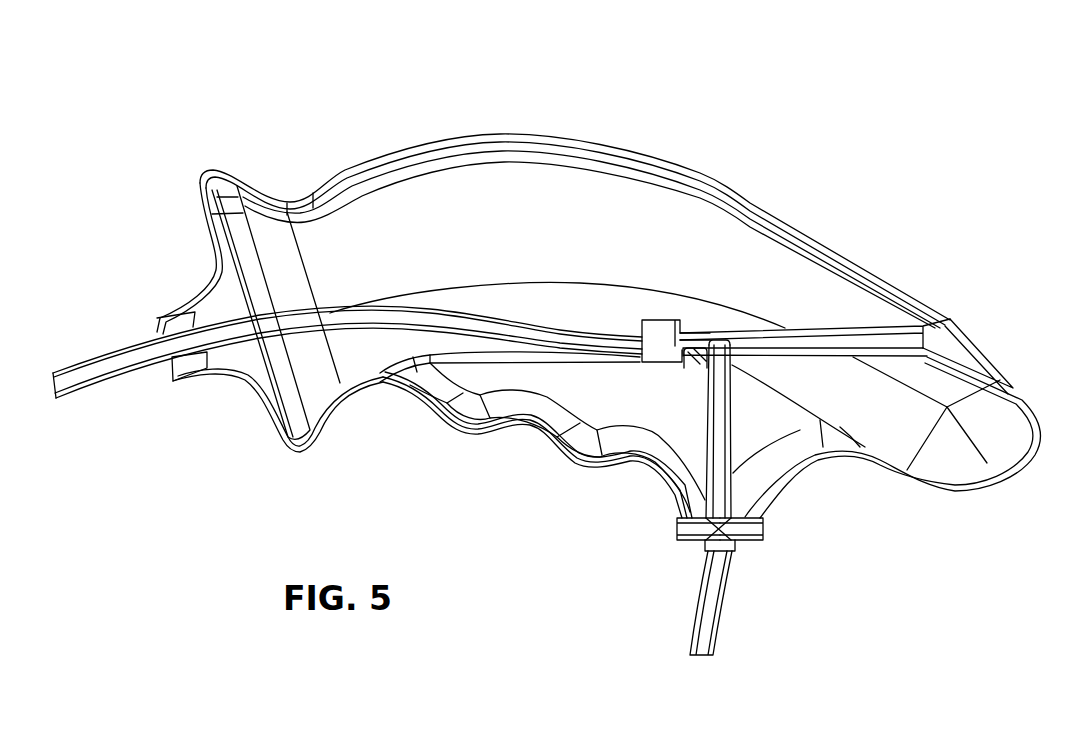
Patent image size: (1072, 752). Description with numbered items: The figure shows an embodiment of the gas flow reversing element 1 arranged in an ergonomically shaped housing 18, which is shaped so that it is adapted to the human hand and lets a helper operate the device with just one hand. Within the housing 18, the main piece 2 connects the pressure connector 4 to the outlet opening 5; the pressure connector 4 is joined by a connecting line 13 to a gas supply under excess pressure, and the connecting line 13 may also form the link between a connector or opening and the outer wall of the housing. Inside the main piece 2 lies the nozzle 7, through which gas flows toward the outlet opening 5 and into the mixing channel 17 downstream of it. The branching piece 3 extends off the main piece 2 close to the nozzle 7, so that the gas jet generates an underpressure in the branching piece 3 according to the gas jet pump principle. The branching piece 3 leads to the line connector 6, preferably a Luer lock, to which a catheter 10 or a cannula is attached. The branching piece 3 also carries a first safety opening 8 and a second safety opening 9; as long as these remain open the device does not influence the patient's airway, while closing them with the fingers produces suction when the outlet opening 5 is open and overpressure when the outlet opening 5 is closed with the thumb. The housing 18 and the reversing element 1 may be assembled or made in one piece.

The gas flow reversing element 1 is at (759, 301).
The main piece 2 is at (813, 323).
The branching piece 3 is at (787, 467).
The pressure connector 4 is at (645, 333).
The outlet opening 5 is at (970, 337).
The line connector 6 is at (723, 563).
The nozzle 7 is at (702, 332).
The first safety opening 8 is at (677, 528).
The second safety opening 9 is at (764, 529).
The catheter 10 is at (707, 637).
The connecting line 13 is at (122, 367).
The mixing channel 17 is at (868, 337).
The housing 18 is at (720, 173).